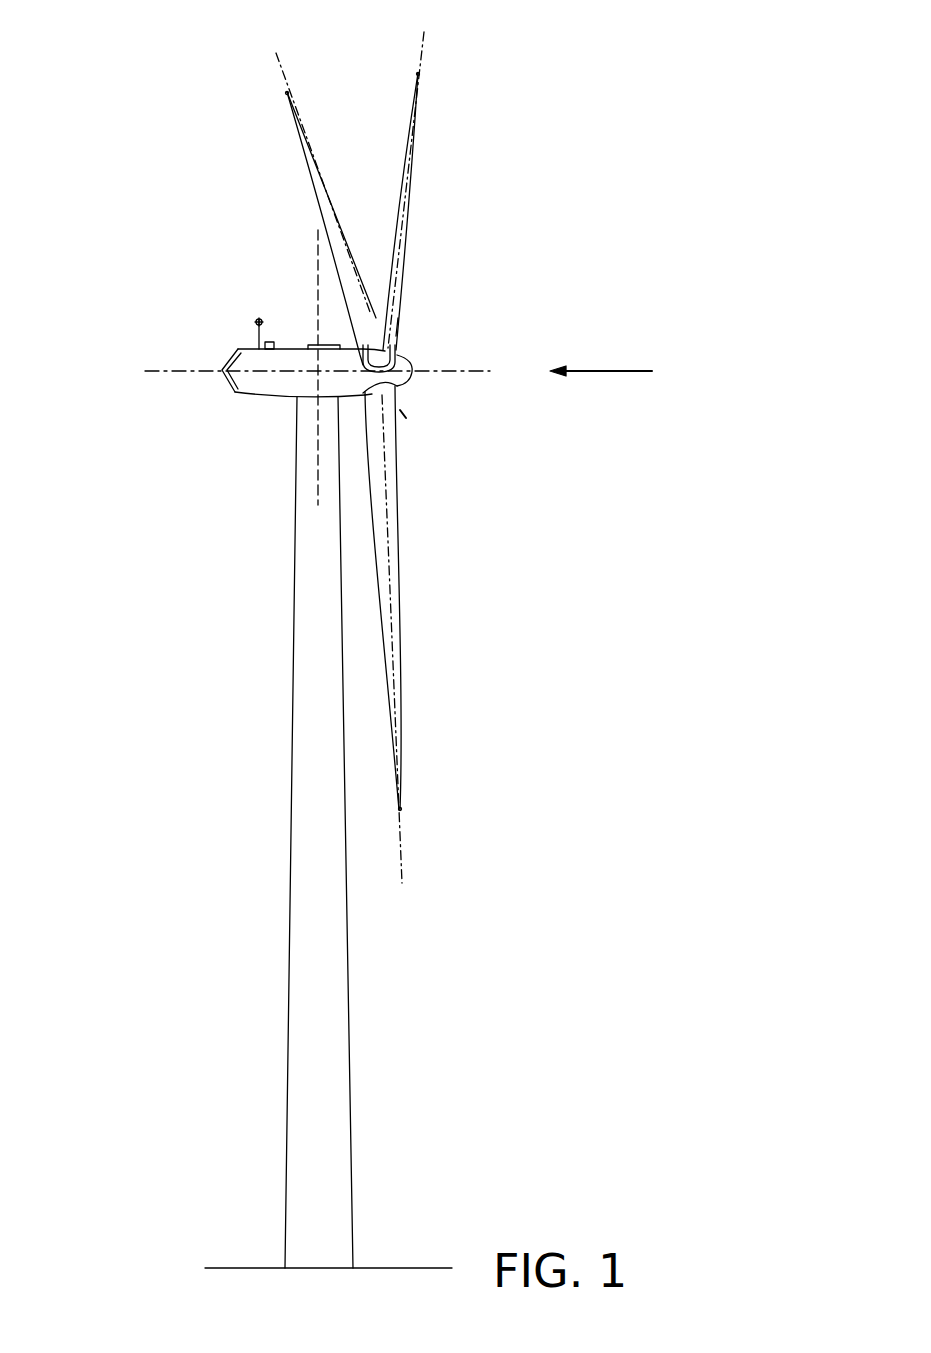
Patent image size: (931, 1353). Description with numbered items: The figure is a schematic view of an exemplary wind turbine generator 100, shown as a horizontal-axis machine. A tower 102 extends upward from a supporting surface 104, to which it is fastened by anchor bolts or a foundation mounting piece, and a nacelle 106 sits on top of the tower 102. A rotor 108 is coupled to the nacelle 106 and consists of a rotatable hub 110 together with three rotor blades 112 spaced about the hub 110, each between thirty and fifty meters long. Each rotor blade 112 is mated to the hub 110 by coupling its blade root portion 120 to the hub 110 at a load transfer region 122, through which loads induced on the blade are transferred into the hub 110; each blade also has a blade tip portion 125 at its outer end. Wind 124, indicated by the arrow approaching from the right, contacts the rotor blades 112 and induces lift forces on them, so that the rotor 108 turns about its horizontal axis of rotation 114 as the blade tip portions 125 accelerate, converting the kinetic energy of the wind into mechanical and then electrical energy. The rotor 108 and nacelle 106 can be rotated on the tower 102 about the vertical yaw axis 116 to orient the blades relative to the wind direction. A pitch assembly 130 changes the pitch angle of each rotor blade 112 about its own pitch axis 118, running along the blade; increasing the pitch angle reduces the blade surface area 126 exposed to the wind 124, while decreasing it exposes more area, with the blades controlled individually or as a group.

The wind turbine generator 100 is at (129, 47).
The tower 102 is at (288, 1030).
The supporting surface 104 is at (257, 1267).
The nacelle 106 is at (263, 398).
The rotor 108 is at (417, 389).
The rotatable hub 110 is at (411, 368).
The rotor blades 112 is at (297, 122).
The axis of rotation 114 is at (465, 374).
The yaw axis 116 is at (316, 284).
The pitch axis 118 is at (280, 67).
The blade root portion 120 is at (390, 530).
The load transfer regions 122 is at (392, 360).
The wind 124 is at (600, 371).
The blade tip portion 125 is at (289, 95).
The blade surface area 126 is at (398, 318).
The pitch assembly 130 is at (400, 410).